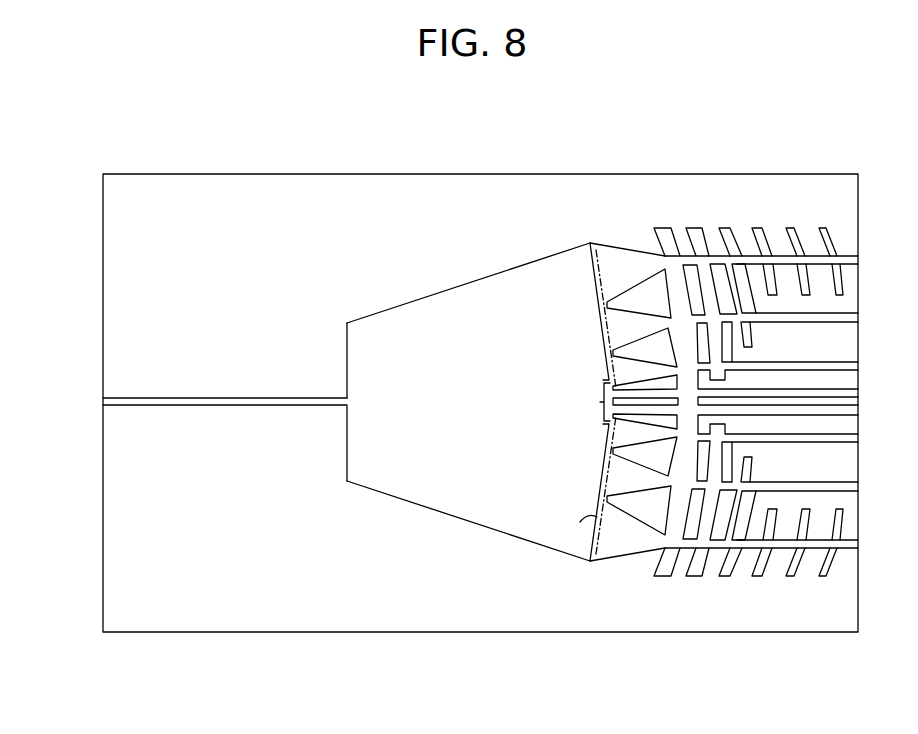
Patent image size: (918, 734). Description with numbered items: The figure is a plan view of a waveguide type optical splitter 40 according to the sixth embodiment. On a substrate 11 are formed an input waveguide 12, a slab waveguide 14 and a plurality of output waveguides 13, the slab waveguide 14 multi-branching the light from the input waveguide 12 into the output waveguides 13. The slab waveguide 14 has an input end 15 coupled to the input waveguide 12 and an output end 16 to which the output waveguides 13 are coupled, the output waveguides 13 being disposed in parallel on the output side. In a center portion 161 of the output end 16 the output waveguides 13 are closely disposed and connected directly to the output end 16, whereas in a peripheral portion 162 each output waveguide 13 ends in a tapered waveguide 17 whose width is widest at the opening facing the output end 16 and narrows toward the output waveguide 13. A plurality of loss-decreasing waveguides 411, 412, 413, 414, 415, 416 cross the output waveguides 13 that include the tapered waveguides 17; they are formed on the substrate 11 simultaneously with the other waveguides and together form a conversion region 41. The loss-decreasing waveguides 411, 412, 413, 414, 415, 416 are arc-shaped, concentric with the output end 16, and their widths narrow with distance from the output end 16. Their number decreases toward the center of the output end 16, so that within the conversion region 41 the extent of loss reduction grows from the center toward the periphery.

The substrate 11 is at (237, 602).
The input waveguide 12 is at (123, 398).
The output waveguides 13 is at (842, 548).
The slab waveguide 14 is at (470, 505).
The input end 15 is at (352, 455).
The output end 16 is at (583, 522).
The tapered waveguide 17 is at (630, 558).
The waveguide type optical splitter 40 is at (188, 162).
The conversion region 41 is at (812, 111).
The center portion 161 is at (600, 398).
The peripheral portion 162 is at (590, 315).
The loss-decreasing waveguide 411 is at (663, 227).
The loss-decreasing waveguide 412 is at (695, 227).
The loss-decreasing waveguide 413 is at (727, 227).
The loss-decreasing waveguide 414 is at (758, 227).
The loss-decreasing waveguide 415 is at (790, 227).
The loss-decreasing waveguide 416 is at (822, 227).